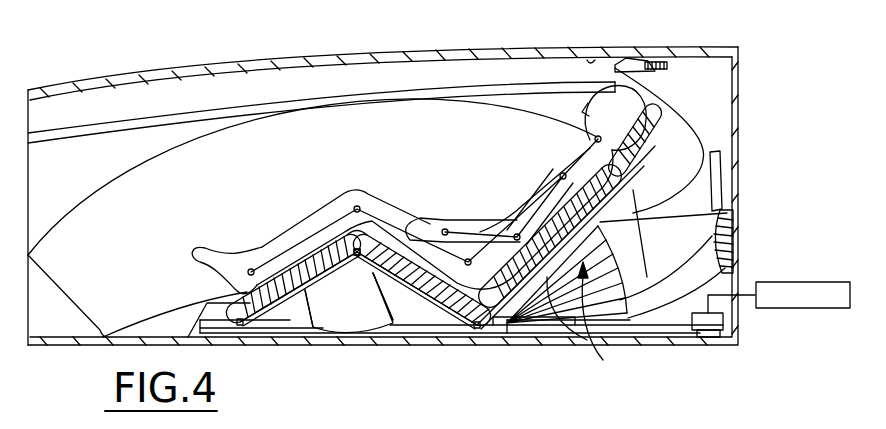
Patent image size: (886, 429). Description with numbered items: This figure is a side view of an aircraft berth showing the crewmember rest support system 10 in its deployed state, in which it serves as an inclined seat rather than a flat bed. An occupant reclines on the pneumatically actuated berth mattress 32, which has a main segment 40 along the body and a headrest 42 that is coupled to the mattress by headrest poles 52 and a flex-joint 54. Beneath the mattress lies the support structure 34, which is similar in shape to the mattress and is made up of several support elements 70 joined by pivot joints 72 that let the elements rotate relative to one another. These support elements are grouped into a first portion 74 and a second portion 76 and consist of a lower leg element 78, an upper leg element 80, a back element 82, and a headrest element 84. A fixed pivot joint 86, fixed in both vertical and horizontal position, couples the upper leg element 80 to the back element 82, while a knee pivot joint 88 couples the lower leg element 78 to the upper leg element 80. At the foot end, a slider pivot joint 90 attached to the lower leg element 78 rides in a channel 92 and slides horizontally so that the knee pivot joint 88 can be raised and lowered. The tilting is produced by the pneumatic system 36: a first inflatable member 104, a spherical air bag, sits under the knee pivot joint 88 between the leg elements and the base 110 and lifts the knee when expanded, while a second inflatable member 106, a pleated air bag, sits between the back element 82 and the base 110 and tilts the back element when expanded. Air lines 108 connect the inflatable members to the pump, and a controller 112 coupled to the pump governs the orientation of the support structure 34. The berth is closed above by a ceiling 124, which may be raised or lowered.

The crewmember rest support system 10 is at (449, 180).
The berth mattress 32 is at (418, 220).
The support structure 34 is at (448, 332).
The pneumatic system 36 is at (658, 328).
The main segment 40 is at (590, 148).
The headrest 42 is at (677, 108).
The headrest poles 52 is at (620, 188).
The flex-joint 54 is at (600, 141).
The support elements 70 is at (645, 163).
The pivot joints 72 is at (330, 243).
The first portion 74 is at (356, 259).
The second portion 76 is at (612, 305).
The lower leg element 78 is at (298, 268).
The upper leg element 80 is at (430, 305).
The back element 82 is at (603, 360).
The headrest element 84 is at (700, 143).
The fixed pivot joint 86 is at (478, 330).
The knee pivot joint 88 is at (374, 248).
The slider pivot joint 90 is at (240, 326).
The channel 92 is at (302, 330).
The first inflatable member 104 is at (412, 312).
The second inflatable member 106 is at (620, 266).
The air lines 108 is at (690, 335).
The base 110 is at (680, 296).
The controller 112 is at (761, 283).
The ceiling 124 is at (386, 52).